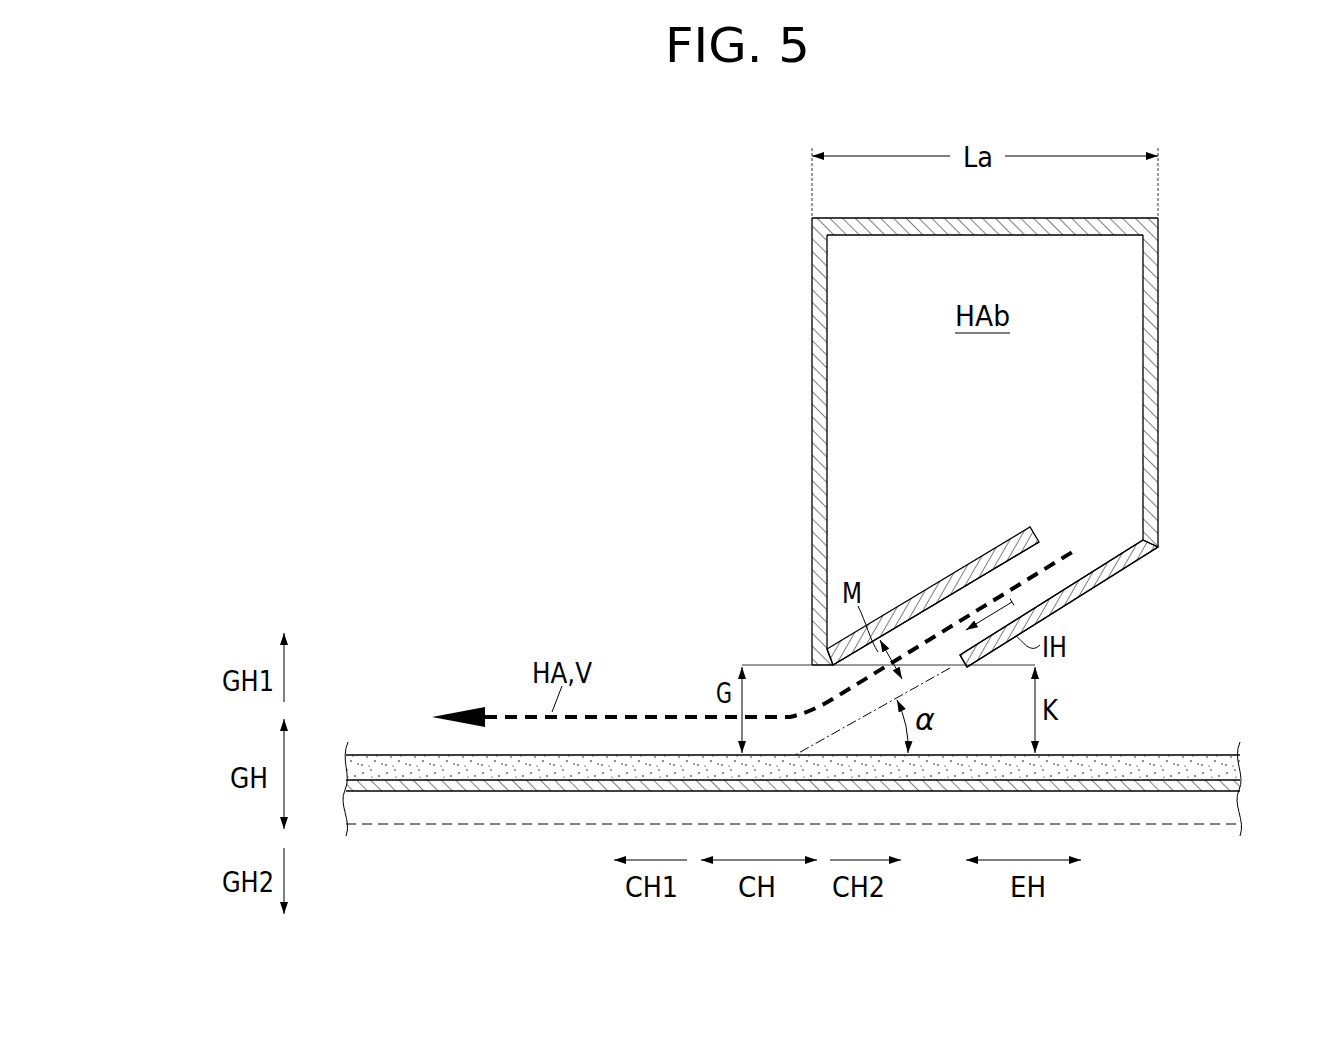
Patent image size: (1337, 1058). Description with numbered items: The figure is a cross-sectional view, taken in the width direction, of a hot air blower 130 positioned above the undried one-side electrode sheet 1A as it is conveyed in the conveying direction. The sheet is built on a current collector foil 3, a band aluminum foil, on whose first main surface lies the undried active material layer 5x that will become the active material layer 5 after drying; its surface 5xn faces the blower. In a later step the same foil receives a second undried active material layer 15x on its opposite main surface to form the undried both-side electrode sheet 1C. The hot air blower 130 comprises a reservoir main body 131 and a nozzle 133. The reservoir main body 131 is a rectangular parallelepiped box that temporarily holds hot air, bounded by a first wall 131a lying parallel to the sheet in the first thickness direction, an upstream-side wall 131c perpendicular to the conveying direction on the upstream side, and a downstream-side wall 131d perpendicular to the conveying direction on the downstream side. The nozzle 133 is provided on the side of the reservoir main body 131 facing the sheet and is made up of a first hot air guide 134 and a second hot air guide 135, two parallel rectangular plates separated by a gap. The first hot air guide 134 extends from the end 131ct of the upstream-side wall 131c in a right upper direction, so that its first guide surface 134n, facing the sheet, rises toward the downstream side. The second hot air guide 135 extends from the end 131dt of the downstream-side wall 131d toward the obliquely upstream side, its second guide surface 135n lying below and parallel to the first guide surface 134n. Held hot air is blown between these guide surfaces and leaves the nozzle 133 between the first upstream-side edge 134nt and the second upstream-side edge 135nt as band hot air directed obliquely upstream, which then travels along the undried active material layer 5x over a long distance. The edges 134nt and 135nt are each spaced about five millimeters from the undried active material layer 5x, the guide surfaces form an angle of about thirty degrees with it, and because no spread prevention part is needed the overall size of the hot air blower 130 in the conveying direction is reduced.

The undried one-side electrode sheet 1A is at (385, 745).
The undried both-side electrode sheet 1C is at (789, 731).
The current collector foil 3 is at (415, 793).
The active material layer 5 is at (480, 827).
The undried active material layer 5x is at (430, 767).
The undried active material layer 15x is at (793, 686).
The surface of the undried active material layer 5xn is at (1125, 755).
The hot air blower 130 is at (804, 312).
The reservoir main body 131 is at (1150, 285).
The first wall 131a is at (1040, 218).
The upstream-side wall 131c is at (812, 418).
The end of the upstream-side wall 131ct is at (812, 652).
The downstream-side wall 131d is at (1150, 332).
The end of the downstream-side wall 131dt is at (1158, 538).
The nozzle 133 is at (1076, 606).
The first hot air guide 134 is at (975, 558).
The first guide surface 134n is at (1030, 548).
The first upstream-side edge 134nt is at (825, 664).
The second hot air guide 135 is at (1093, 588).
The second guide surface 135n is at (1097, 556).
The second upstream-side edge 135nt is at (960, 670).